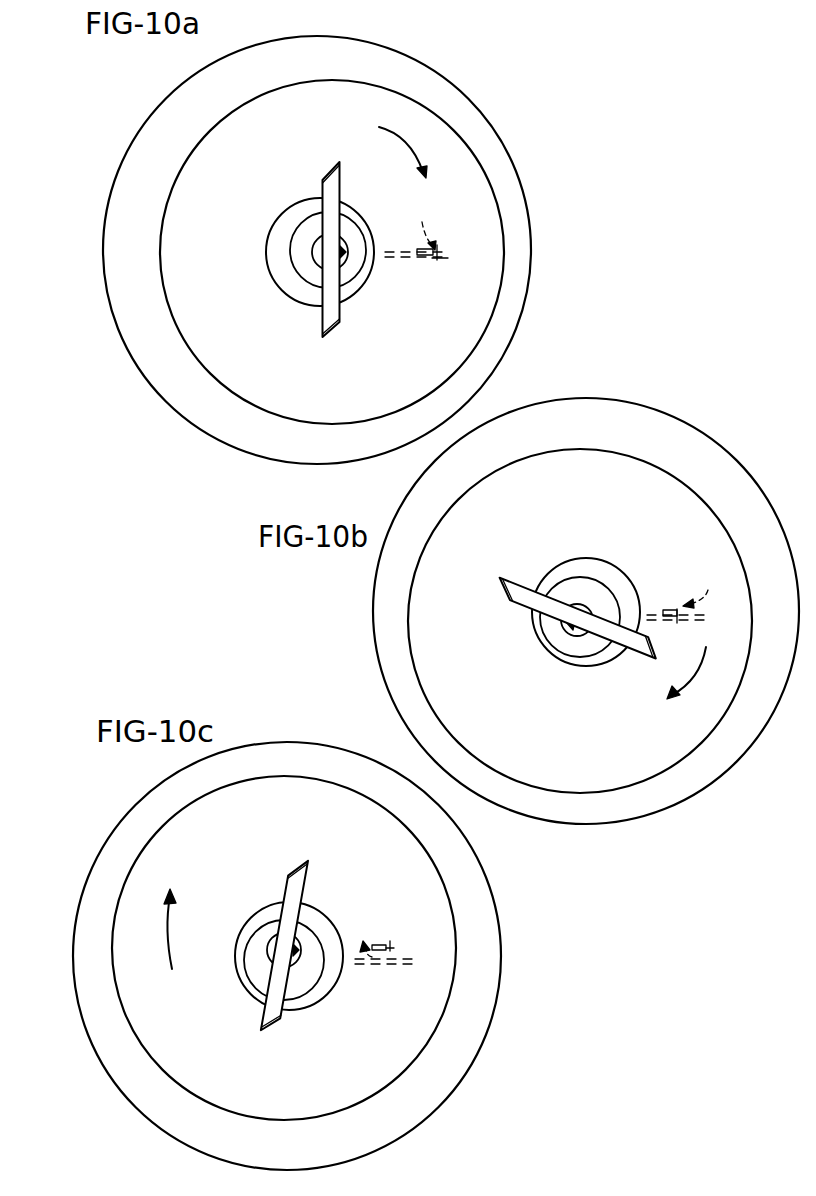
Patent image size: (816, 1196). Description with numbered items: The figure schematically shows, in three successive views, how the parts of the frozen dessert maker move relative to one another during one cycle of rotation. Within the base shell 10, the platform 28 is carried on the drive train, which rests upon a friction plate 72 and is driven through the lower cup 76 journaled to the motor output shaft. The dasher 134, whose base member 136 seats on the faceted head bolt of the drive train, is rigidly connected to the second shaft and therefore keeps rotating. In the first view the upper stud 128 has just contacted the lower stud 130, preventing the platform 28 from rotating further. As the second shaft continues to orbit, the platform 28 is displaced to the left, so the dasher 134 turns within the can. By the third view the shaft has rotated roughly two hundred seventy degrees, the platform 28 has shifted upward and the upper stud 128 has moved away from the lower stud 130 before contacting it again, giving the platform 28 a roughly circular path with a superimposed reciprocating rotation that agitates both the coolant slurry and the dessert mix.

In FIG. 10A, the base shell 10 is at (498, 138).
In FIG. 10B, the base shell 10 is at (372, 612).
In FIG. 10C, the base shell 10 is at (492, 902).
In FIG. 10A, the platform 28 is at (208, 124).
In FIG. 10B, the platform 28 is at (495, 474).
In FIG. 10C, the platform 28 is at (194, 805).
In FIG. 10A, the friction plate 72 is at (268, 268).
In FIG. 10B, the friction plate 72 is at (617, 568).
In FIG. 10C, the friction plate 72 is at (336, 930).
In FIG. 10A, the lower cup 76 is at (292, 236).
In FIG. 10B, the lower cup 76 is at (577, 578).
In FIG. 10C, the lower cup 76 is at (316, 982).
In FIG. 10A, the dasher 134 is at (340, 190).
In FIG. 10B, the dasher 134 is at (528, 604).
In FIG. 10C, the dasher 134 is at (301, 886).
In FIG. 10A, the base member 136 is at (348, 263).
In FIG. 10B, the base member 136 is at (584, 637).
In FIG. 10C, the base member 136 is at (268, 934).
In FIG. 10A, the upper stud 128 is at (440, 247).
In FIG. 10B, the upper stud 128 is at (663, 607).
In FIG. 10C, the upper stud 128 is at (388, 942).
In FIG. 10A, the lower stud 130 is at (442, 260).
In FIG. 10B, the lower stud 130 is at (680, 621).
In FIG. 10C, the lower stud 130 is at (380, 965).